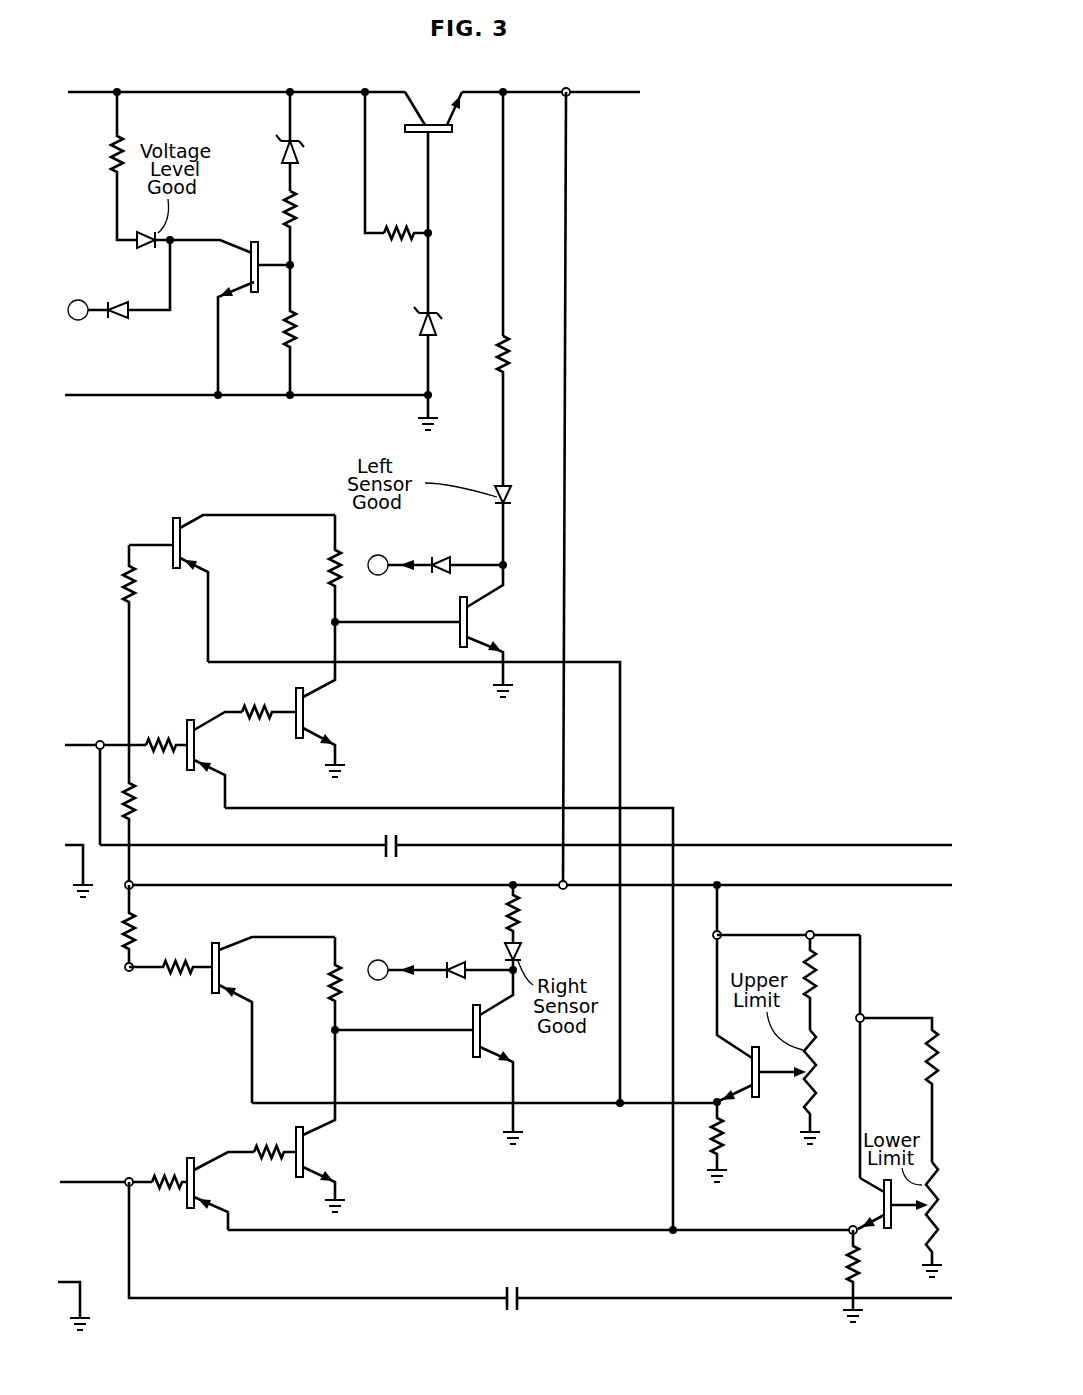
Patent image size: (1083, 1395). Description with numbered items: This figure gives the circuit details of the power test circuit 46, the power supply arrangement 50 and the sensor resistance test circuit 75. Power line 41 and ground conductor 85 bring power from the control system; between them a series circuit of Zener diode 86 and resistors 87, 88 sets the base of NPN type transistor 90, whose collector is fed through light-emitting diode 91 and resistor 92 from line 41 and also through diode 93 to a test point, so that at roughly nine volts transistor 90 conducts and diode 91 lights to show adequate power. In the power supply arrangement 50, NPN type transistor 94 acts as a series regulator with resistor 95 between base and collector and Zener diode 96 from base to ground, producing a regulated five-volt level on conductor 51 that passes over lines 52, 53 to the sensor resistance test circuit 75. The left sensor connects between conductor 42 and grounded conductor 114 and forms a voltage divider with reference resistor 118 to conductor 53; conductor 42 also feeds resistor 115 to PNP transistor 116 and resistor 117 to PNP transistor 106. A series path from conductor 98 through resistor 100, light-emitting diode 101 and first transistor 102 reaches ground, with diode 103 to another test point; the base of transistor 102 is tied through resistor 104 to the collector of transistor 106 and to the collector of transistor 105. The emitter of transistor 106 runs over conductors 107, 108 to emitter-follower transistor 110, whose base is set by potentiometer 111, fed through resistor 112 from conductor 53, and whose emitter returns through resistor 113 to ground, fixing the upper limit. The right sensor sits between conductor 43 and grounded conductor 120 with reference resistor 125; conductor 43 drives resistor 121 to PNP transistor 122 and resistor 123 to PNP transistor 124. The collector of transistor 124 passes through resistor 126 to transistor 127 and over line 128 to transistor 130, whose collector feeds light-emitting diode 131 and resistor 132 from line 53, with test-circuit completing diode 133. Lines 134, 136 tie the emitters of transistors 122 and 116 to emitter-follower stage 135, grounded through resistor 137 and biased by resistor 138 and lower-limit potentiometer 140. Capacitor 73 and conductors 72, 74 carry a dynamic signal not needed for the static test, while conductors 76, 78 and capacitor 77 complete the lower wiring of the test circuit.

The power line 41 is at (92, 92).
The conductor 42 is at (77, 743).
The conductor 43 is at (104, 1178).
The power test circuit 46 is at (270, 216).
The power supply arrangement 50 is at (412, 170).
The conductor 51 is at (543, 92).
The line 52 is at (568, 280).
The conductor 53 is at (897, 884).
The conductor 72 is at (879, 843).
The capacitor 73 is at (409, 855).
The conductor 74 is at (251, 846).
The sensor resistance test circuit 75 is at (818, 800).
The conductor 76 is at (765, 1297).
The capacitor 77 is at (517, 1287).
The conductor 78 is at (340, 1297).
The ground conductor 85 is at (142, 400).
The Zener diode 86 is at (304, 141).
The resistor 87 is at (305, 228).
The resistor 88 is at (305, 330).
The NPN type transistor 90 is at (224, 317).
The light-emitting diode 91 is at (142, 228).
The resistor 92 is at (100, 166).
The diode 93 is at (121, 292).
The NPN type transistor 94 is at (433, 156).
The resistor 95 is at (408, 223).
The Zener diode 96 is at (412, 314).
The conductor 98 is at (505, 237).
The resistor 100 is at (525, 411).
The light-emitting diode 101 is at (527, 525).
The first transistor 102 is at (424, 631).
The diode 103 is at (435, 553).
The resistor 104 is at (314, 570).
The NPN type transistor 105 is at (295, 699).
The second transistor 106 is at (232, 588).
The conductor 107 is at (416, 884).
The conductor 108 is at (543, 1103).
The emitter-follower NPN type transistor 110 is at (758, 993).
The potentiometer 111 is at (831, 1087).
The resistor 112 is at (789, 980).
The resistor 113 is at (738, 1140).
The conductor 114 is at (88, 843).
The first resistor 115 is at (163, 733).
The third transistor 116 is at (218, 760).
The resistor 117 is at (111, 645).
The reference resistor 118 is at (152, 815).
The conductor 120 is at (91, 1297).
The resistor 121 is at (168, 1171).
The PNP type transistor 122 is at (220, 1191).
The resistor 123 is at (170, 980).
The PNP type transistor 124 is at (273, 1020).
The reference resistor 125 is at (152, 928).
The resistor 126 is at (317, 985).
The NPN type transistor 127 is at (303, 1121).
The line 128 is at (362, 1033).
The NPN type transistor 130 is at (499, 1057).
The light-emitting diode 131 is at (536, 958).
The resistor 132 is at (536, 914).
The test-circuit completing diode 133 is at (440, 957).
The line 134 is at (412, 1230).
The emitter-follower stage 135 is at (880, 1203).
The line 136 is at (386, 808).
The resistor 137 is at (835, 1276).
The resistor 138 is at (897, 1056).
The potentiometer 140 is at (920, 1225).